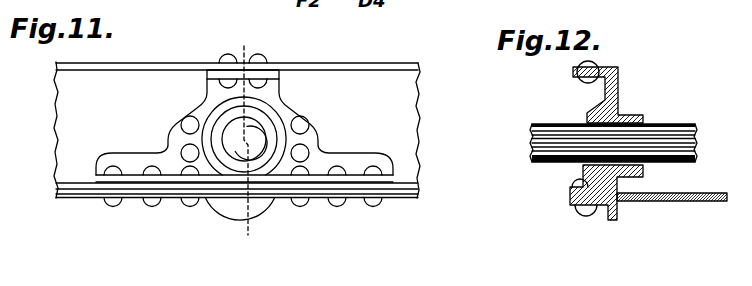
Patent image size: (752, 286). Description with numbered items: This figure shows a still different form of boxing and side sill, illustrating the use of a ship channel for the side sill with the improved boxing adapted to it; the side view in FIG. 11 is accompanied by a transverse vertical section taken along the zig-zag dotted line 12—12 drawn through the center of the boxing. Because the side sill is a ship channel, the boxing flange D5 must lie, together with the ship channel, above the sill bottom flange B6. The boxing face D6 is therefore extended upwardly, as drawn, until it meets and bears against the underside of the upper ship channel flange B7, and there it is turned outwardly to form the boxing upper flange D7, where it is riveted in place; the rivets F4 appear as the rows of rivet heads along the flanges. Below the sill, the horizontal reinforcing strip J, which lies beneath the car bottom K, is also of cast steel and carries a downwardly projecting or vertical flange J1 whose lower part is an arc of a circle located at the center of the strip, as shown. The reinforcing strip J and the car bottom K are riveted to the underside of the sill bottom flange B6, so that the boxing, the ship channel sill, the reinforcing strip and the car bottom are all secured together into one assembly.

In FIG. 11, the section line 12 is at (246, 144).
In FIG. 11, the upper ship channel flange B7 is at (408, 68).
In FIG. 12, the upper ship channel flange B7 is at (573, 68).
In FIG. 11, the sill bottom flange B6 is at (418, 192).
In FIG. 12, the sill bottom flange B6 is at (572, 190).
In FIG. 11, the boxing upper flange D7 is at (268, 75).
In FIG. 12, the boxing upper flange D7 is at (573, 77).
In FIG. 11, the boxing face D6 is at (313, 138).
In FIG. 11, the boxing flange D5 is at (387, 182).
In FIG. 11, the rivets F4 is at (337, 205).
In FIG. 11, the horizontal reinforcing strip J is at (390, 203).
In FIG. 12, the horizontal reinforcing strip J is at (573, 203).
In FIG. 11, the vertical flange of reinforcing strip J1 is at (270, 213).
In FIG. 12, the vertical flange of reinforcing strip J1 is at (612, 220).
In FIG. 11, the car bottom K is at (408, 198).
In FIG. 12, the car bottom K is at (672, 202).